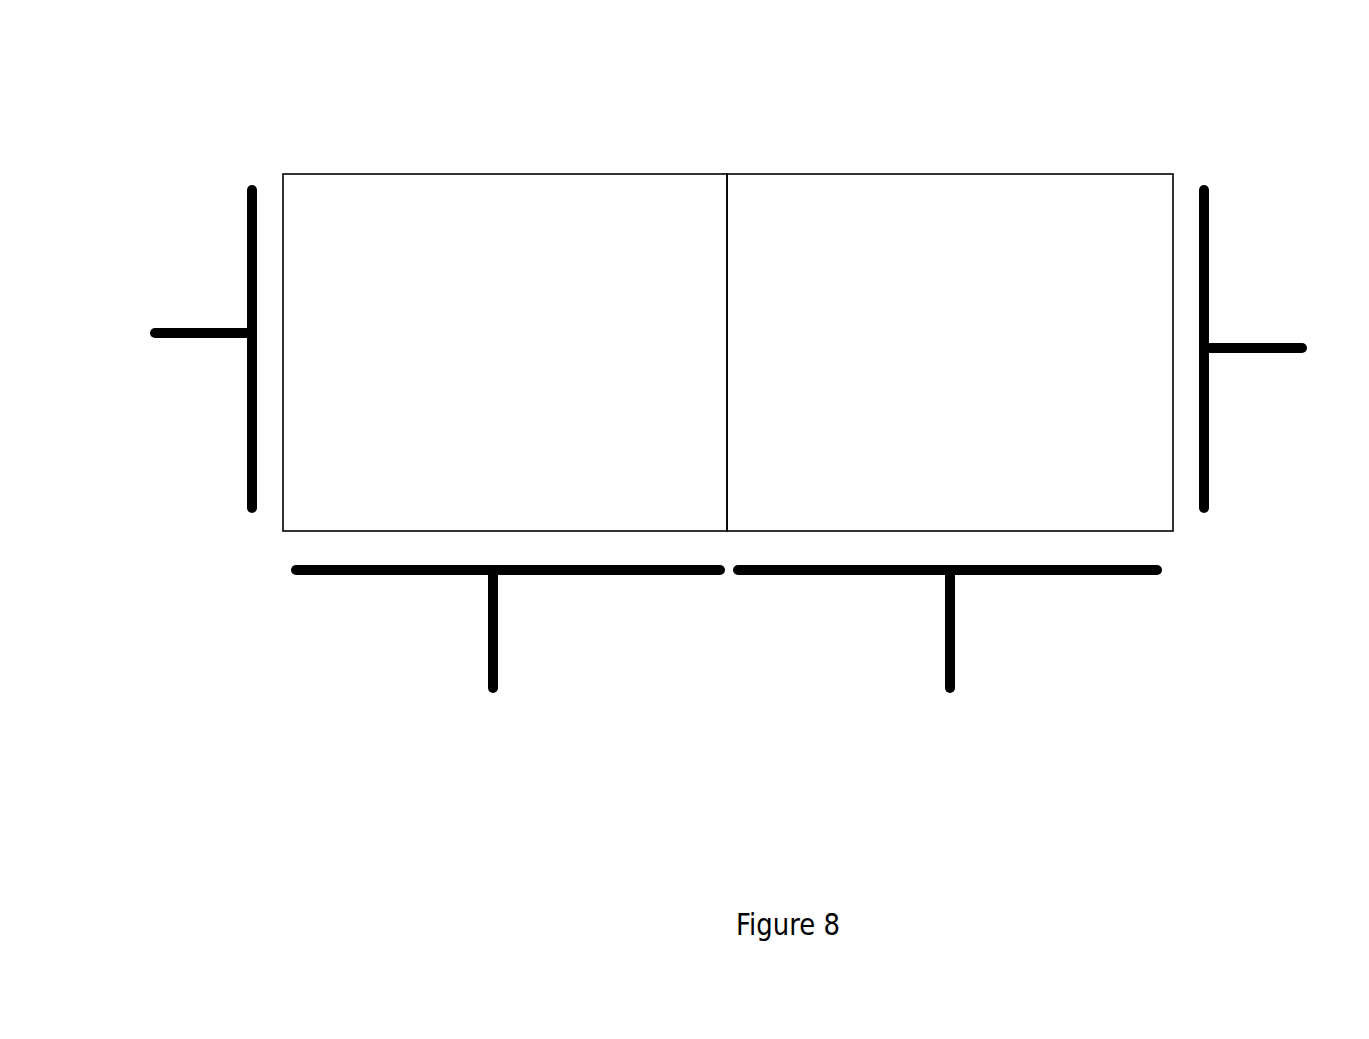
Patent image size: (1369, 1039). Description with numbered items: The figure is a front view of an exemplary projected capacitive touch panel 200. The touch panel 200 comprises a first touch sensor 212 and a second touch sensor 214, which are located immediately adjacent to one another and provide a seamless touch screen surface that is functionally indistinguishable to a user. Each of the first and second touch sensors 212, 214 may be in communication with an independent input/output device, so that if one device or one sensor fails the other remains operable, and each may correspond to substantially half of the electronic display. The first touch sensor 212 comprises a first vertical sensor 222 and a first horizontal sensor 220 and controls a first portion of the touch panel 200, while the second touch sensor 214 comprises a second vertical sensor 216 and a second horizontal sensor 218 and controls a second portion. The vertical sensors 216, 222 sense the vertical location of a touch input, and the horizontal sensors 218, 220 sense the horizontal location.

The projected capacitive touch panel 200 is at (735, 352).
The first touch sensor 212 is at (343, 207).
The second touch sensor 214 is at (1078, 217).
The second vertical sensor 216 is at (1205, 438).
The second horizontal sensor 218 is at (825, 572).
The first horizontal sensor 220 is at (385, 572).
The first vertical sensor 222 is at (242, 448).